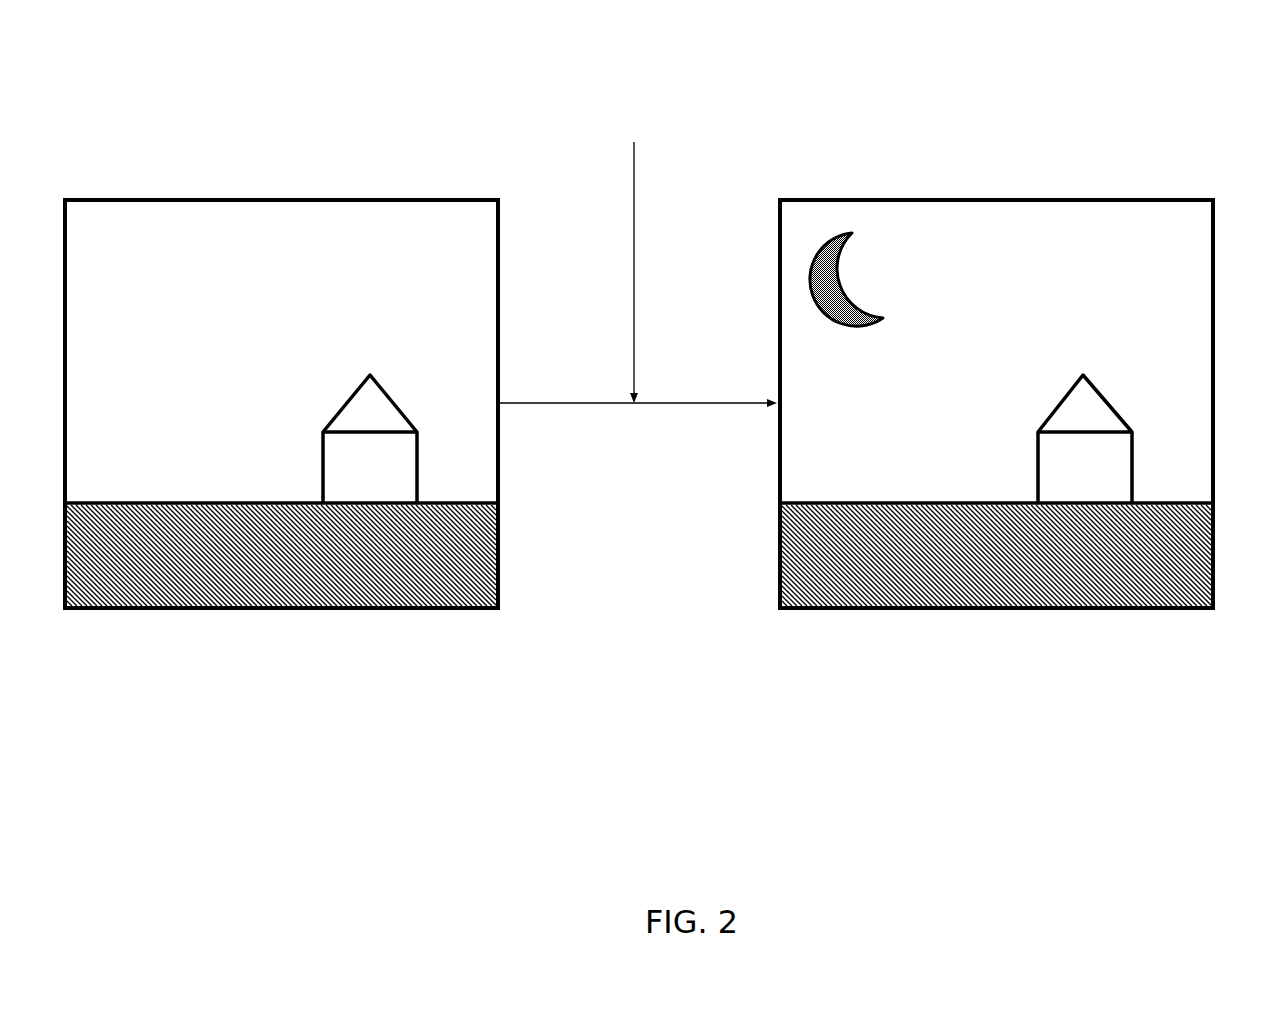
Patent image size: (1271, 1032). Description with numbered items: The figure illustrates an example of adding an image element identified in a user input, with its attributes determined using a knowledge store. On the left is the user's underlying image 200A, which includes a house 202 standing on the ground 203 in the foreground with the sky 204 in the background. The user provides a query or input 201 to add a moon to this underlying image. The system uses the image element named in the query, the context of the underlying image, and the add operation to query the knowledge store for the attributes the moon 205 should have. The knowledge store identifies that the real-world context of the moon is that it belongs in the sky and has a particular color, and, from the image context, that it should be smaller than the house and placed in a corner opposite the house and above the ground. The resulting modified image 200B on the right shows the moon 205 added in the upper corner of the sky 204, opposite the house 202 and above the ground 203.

The underlying image 200A is at (107, 164).
The modified underlying image 200B is at (1201, 161).
The user input 201 is at (612, 98).
The house 202 is at (370, 372).
The ground 203 is at (225, 588).
The sky 204 is at (268, 237).
The moon 205 is at (843, 235).